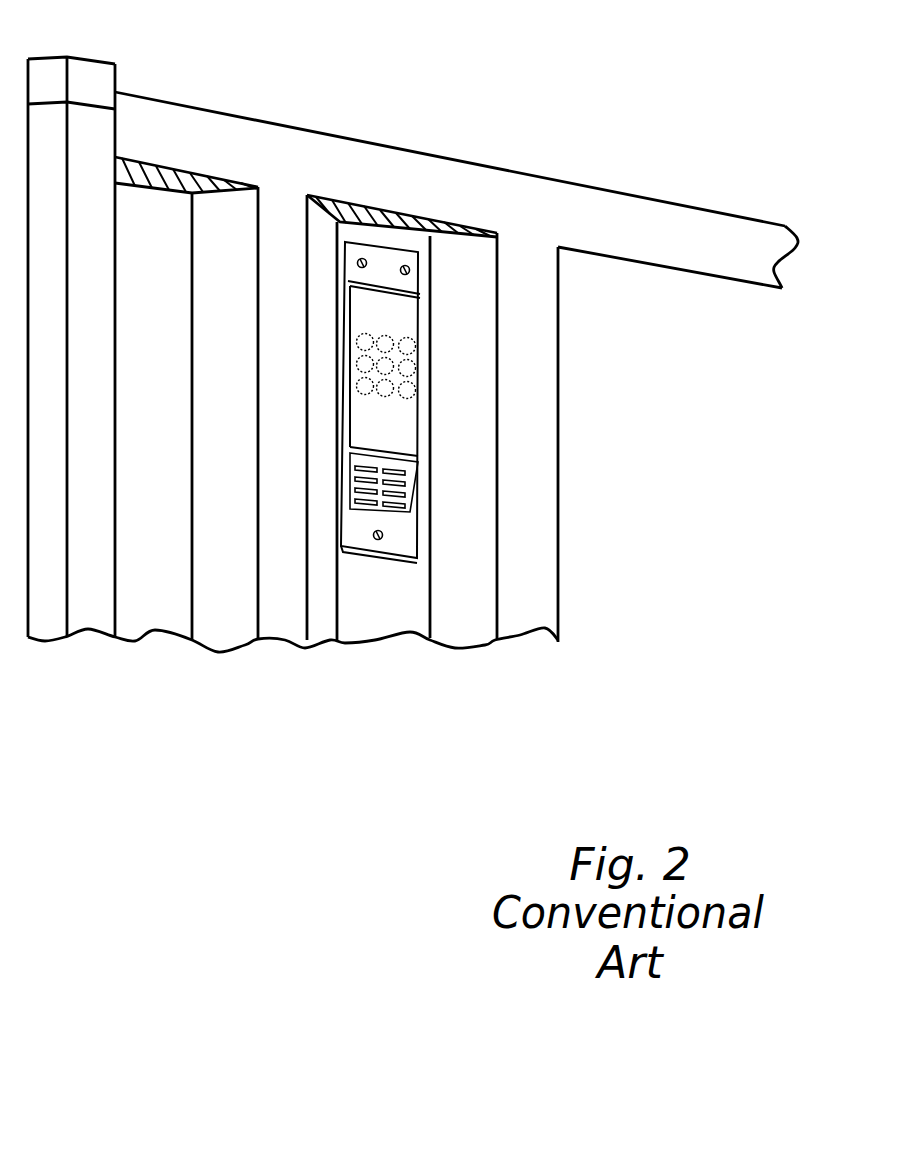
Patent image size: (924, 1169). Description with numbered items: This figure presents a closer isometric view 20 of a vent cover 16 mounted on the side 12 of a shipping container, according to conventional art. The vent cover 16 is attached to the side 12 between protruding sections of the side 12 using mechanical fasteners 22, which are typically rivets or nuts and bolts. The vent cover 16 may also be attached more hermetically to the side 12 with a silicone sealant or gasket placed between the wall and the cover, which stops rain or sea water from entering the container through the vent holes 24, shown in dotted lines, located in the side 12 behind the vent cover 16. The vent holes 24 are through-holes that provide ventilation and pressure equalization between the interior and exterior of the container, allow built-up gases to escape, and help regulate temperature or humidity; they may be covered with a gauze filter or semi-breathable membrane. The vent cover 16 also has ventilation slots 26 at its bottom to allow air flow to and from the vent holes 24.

The side 12 is at (577, 310).
The vent cover 16 is at (397, 327).
The closer isometric view 20 is at (305, 775).
The mechanical fasteners 22 is at (365, 258).
The vent holes 24 is at (395, 386).
The ventilation slots 26 is at (420, 481).